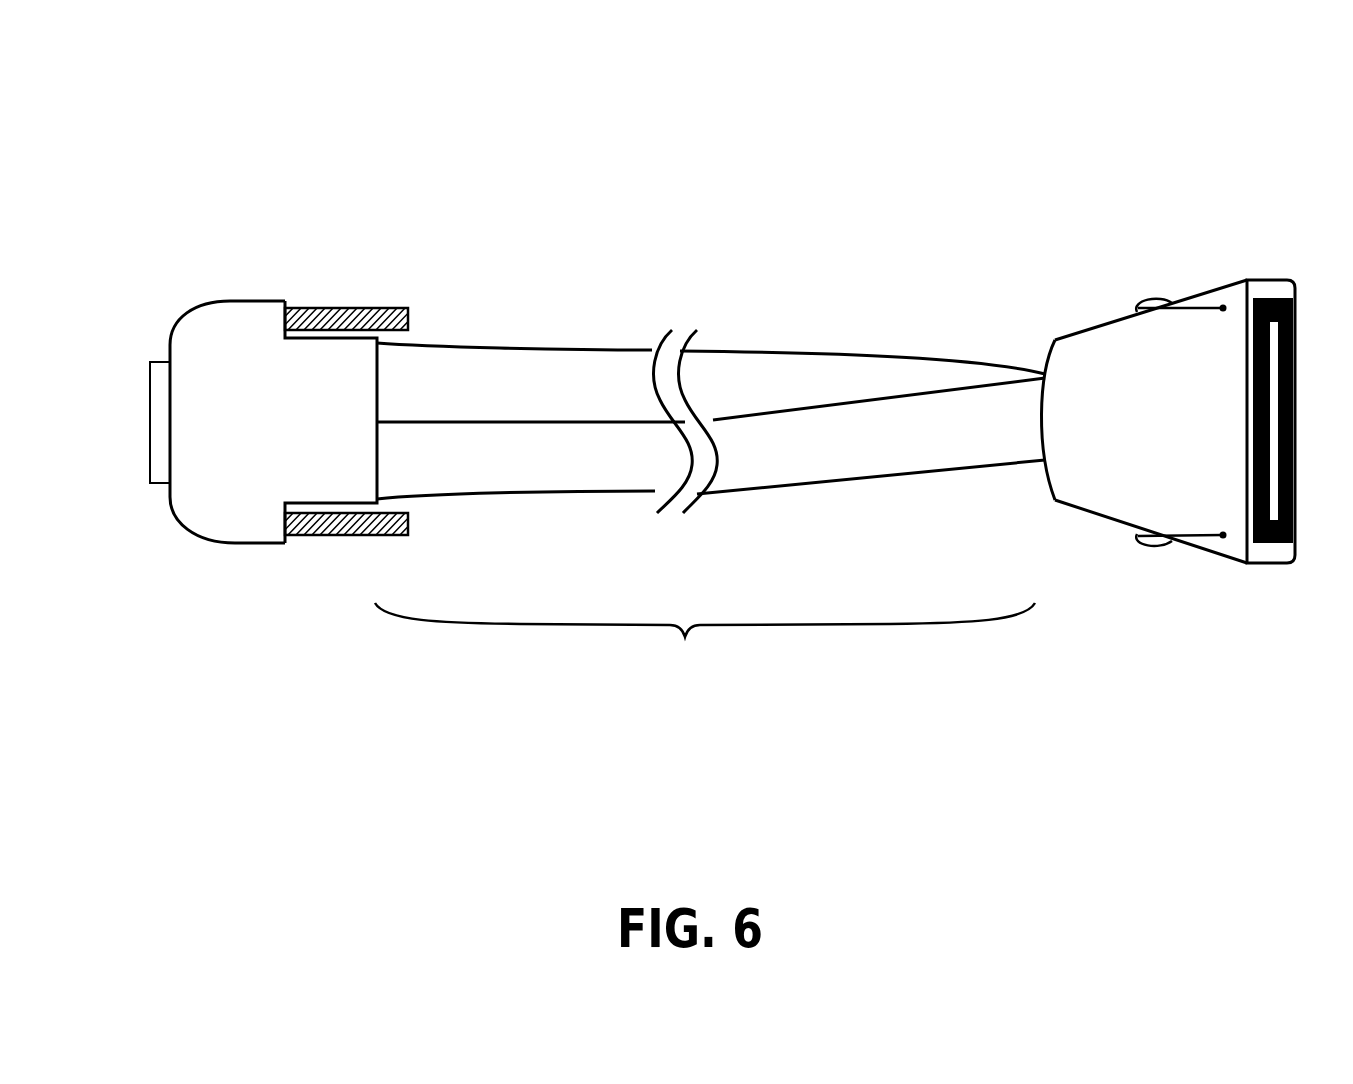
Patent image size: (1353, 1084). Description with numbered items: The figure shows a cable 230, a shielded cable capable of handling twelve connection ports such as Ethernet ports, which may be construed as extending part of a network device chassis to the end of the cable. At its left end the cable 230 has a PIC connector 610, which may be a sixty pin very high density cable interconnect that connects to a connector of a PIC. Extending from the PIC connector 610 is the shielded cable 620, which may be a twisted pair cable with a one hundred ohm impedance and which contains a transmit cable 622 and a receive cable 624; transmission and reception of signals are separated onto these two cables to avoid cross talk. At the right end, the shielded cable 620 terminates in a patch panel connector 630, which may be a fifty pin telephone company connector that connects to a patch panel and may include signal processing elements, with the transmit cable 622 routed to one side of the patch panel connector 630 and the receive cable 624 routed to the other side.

The cable 230 is at (175, 127).
The PIC connector 610 is at (210, 545).
The shielded cable 620 is at (710, 512).
The transmit cable 622 is at (563, 348).
The receive cable 624 is at (562, 493).
The patch panel connector 630 is at (1263, 567).